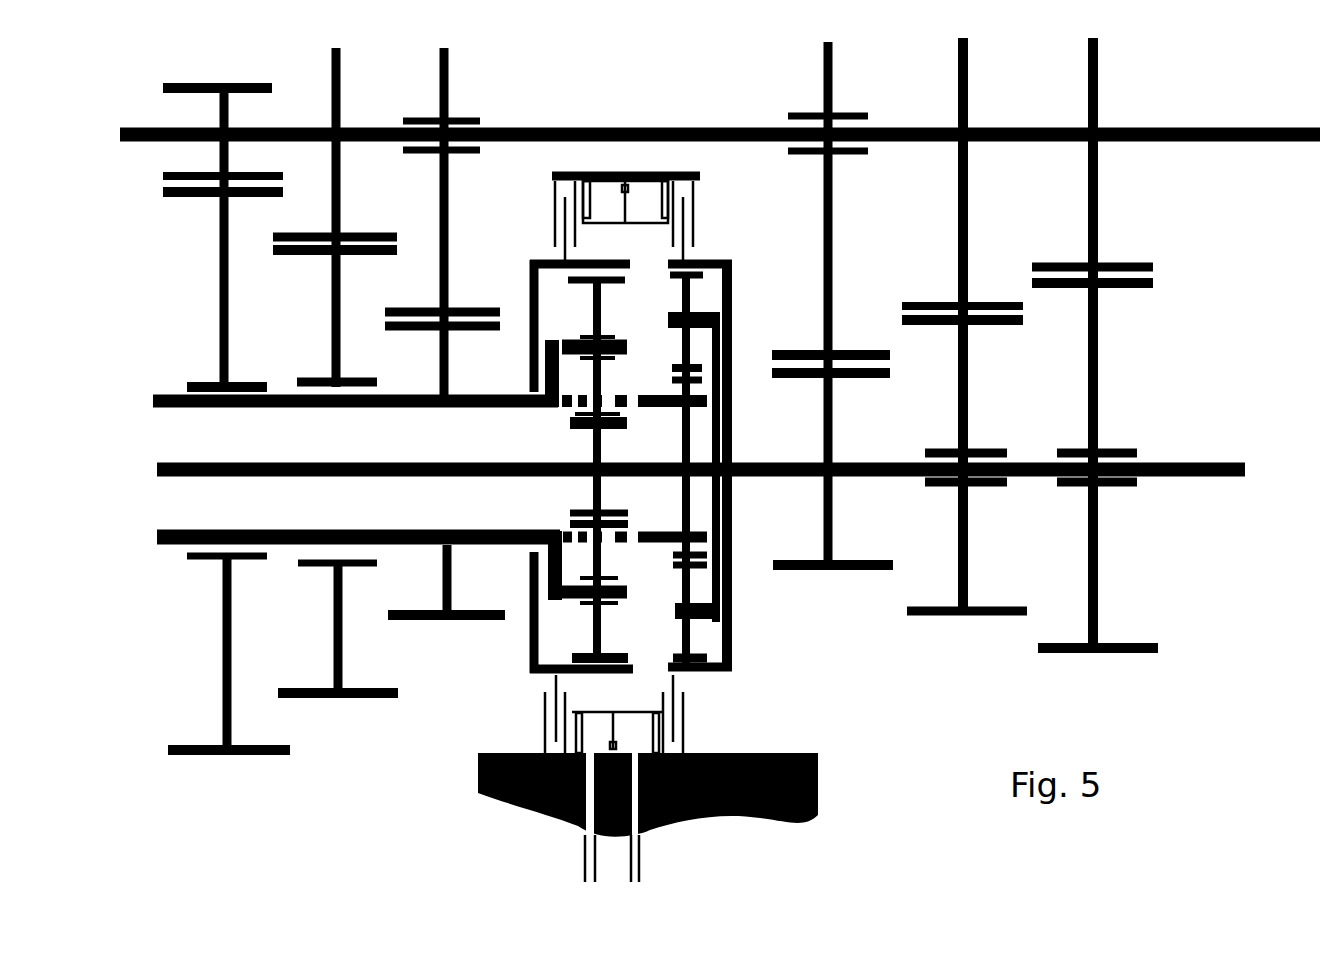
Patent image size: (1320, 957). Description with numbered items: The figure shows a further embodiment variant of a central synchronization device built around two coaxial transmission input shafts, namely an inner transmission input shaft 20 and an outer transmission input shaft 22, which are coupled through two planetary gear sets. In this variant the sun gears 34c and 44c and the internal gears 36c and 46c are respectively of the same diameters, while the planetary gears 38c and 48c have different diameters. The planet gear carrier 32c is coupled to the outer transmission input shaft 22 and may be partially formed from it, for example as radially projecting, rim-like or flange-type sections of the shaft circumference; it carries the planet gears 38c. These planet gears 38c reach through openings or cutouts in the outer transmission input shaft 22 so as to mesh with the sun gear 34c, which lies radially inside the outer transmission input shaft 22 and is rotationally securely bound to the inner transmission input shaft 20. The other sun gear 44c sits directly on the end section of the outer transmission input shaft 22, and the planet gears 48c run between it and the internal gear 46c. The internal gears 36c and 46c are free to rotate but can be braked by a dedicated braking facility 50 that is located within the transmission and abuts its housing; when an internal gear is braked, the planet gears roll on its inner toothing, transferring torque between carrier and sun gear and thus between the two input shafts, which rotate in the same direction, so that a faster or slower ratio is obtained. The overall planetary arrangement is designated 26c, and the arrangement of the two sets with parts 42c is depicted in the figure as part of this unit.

The inner transmission input shaft 20 is at (413, 478).
The outer transmission input shaft 22 is at (280, 547).
The planetary gear unit 26c is at (752, 598).
The planet gear carrier 32c is at (545, 366).
The sun gear 34c is at (593, 493).
The internal gear 36c is at (532, 278).
The planet gears 38c is at (593, 297).
The ring gear 42c is at (733, 333).
The sun gear 44c is at (700, 380).
The internal gear 46c is at (733, 270).
The planet gears 48c is at (690, 293).
The braking facility 50 is at (612, 174).